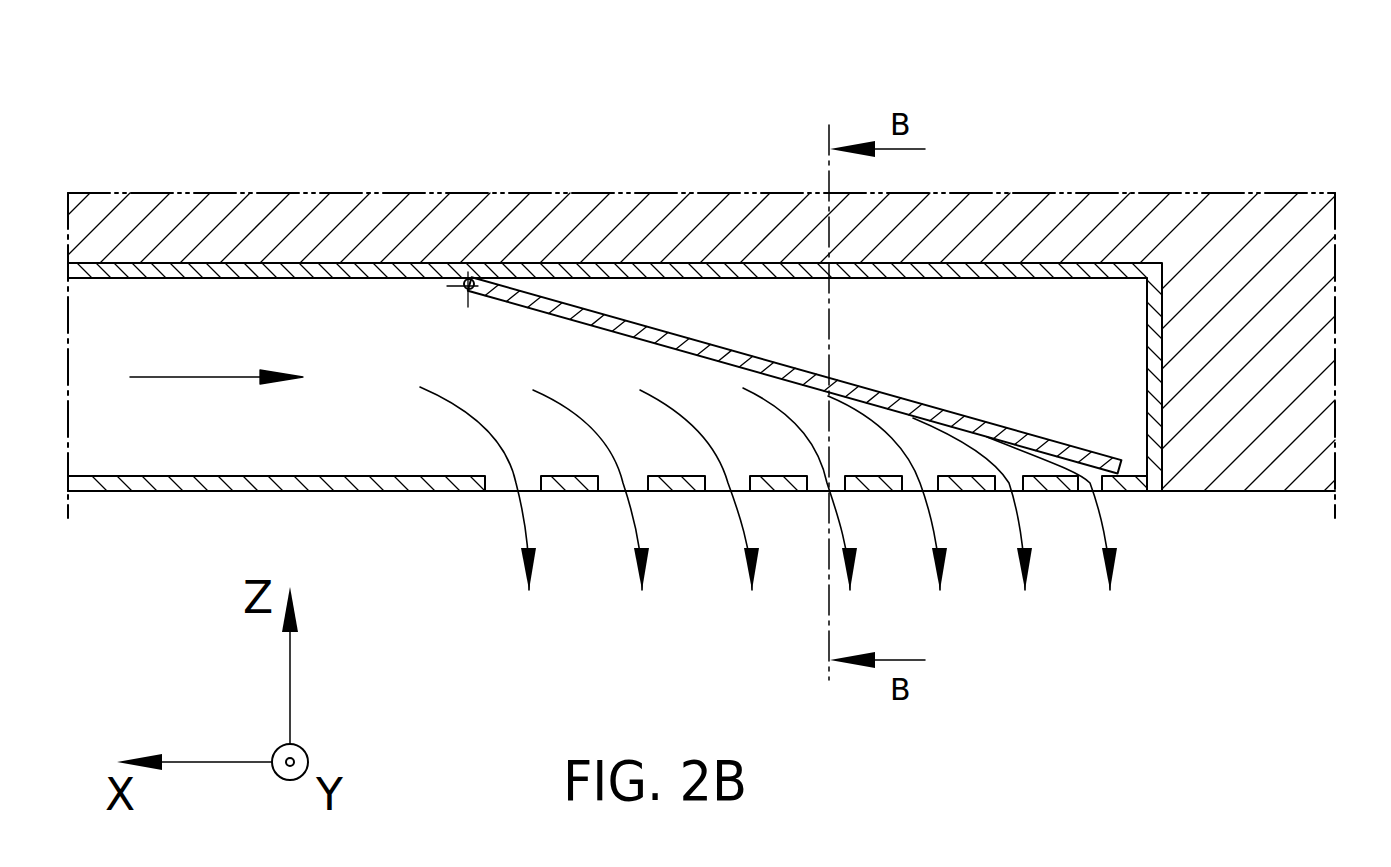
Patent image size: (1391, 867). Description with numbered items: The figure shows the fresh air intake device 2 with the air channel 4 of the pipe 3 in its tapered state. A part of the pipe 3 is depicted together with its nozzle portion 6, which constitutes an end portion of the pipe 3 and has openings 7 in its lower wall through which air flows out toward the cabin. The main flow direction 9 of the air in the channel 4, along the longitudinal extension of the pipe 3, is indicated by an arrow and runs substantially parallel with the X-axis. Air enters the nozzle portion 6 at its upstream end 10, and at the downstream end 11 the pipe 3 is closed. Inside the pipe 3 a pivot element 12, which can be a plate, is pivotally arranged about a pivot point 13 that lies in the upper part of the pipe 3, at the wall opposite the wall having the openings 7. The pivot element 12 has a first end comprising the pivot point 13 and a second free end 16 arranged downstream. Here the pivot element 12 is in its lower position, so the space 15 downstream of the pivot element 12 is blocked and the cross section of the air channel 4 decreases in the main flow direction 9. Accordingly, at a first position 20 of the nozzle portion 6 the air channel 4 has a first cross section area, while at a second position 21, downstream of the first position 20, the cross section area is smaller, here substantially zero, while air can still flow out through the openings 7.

The fresh air intake device 2 is at (1255, 103).
The pipe 3 is at (280, 482).
The air channel 4 is at (453, 433).
The nozzle portion 6 is at (793, 485).
The openings 7 is at (633, 488).
The main flow direction 9 is at (200, 377).
The upstream end 10 is at (433, 347).
The downstream end 11 is at (1202, 503).
The pivot element 12 is at (650, 330).
The pivot point 13 is at (472, 282).
The space 15 is at (985, 365).
The second free end 16 is at (1133, 476).
The first position 20 is at (480, 335).
The second position 21 is at (1098, 382).